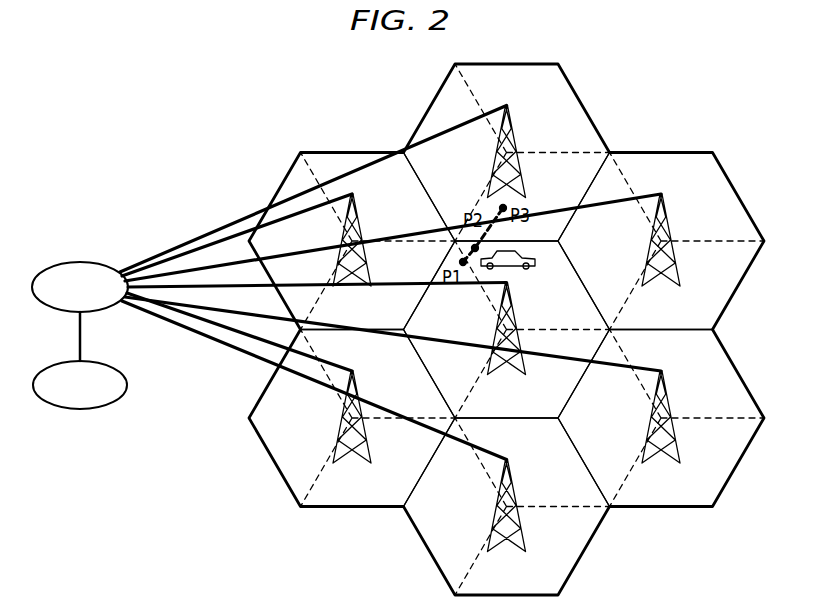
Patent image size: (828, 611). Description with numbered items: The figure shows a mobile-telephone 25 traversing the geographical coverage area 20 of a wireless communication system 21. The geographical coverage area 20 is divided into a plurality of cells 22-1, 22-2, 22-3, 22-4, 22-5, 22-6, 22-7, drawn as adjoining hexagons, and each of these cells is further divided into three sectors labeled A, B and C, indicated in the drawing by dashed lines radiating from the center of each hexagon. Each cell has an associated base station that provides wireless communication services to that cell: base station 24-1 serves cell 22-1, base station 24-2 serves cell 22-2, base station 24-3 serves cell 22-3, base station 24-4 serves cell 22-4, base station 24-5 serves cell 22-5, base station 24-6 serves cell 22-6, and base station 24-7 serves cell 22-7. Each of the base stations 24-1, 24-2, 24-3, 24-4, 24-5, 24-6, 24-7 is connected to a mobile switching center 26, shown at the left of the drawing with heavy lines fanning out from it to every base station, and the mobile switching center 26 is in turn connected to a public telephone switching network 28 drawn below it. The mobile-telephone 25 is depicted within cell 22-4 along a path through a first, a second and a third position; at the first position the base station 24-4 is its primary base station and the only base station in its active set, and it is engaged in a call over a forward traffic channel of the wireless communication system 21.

The geographical coverage area 20 is at (305, 96).
The wireless communication system 21 is at (140, 197).
The cell 22-1 is at (276, 197).
The cell 22-2 is at (263, 400).
The cell 22-3 is at (440, 90).
The cell 22-4 is at (531, 404).
The cell 22-5 is at (597, 530).
The cell 22-6 is at (738, 188).
The cell 22-7 is at (738, 368).
The base station 24-1 is at (368, 275).
The base station 24-2 is at (356, 380).
The base station 24-3 is at (510, 112).
The base station 24-4 is at (510, 290).
The base station 24-5 is at (510, 468).
The base station 24-6 is at (665, 198).
The base station 24-7 is at (665, 376).
The mobile-telephone 25 is at (488, 272).
The mobile switching center 26 is at (55, 265).
The public telephone switching network 28 is at (57, 362).